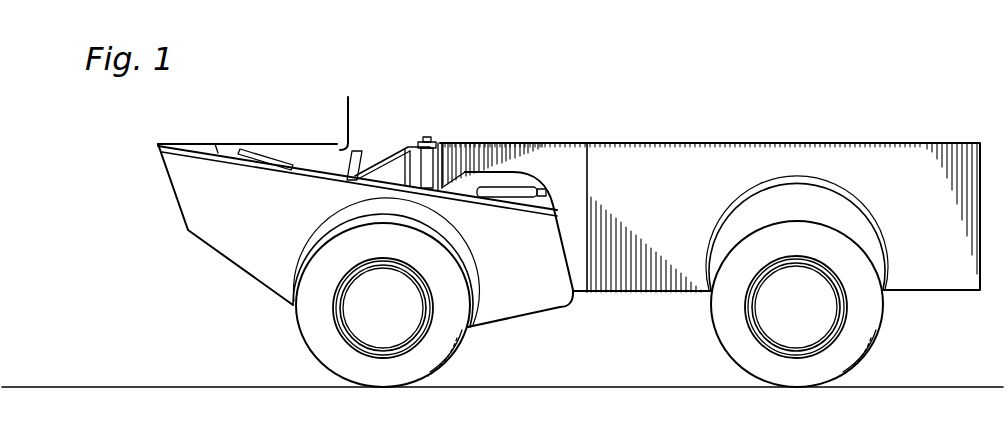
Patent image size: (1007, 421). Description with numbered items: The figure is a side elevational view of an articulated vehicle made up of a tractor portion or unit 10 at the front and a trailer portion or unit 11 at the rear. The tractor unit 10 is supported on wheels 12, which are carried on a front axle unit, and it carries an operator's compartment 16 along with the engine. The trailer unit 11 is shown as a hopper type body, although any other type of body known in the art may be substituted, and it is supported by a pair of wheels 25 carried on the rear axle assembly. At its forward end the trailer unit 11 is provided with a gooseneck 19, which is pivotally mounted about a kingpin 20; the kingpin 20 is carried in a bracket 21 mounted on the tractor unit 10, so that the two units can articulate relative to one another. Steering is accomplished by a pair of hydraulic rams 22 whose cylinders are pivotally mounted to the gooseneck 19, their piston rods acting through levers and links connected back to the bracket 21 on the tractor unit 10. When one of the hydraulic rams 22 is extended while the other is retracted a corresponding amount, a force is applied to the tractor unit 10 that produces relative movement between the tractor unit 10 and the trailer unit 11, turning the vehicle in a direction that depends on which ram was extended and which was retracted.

The tractor portion or unit 10 is at (252, 246).
The trailer portion or unit 11 is at (659, 160).
The wheels 12 is at (319, 332).
The operator's compartment 16 is at (309, 160).
The gooseneck 19 is at (495, 141).
The kingpin 20 is at (444, 142).
The bracket 21 is at (391, 155).
The hydraulic rams 22 is at (496, 198).
The wheels 25 is at (710, 348).